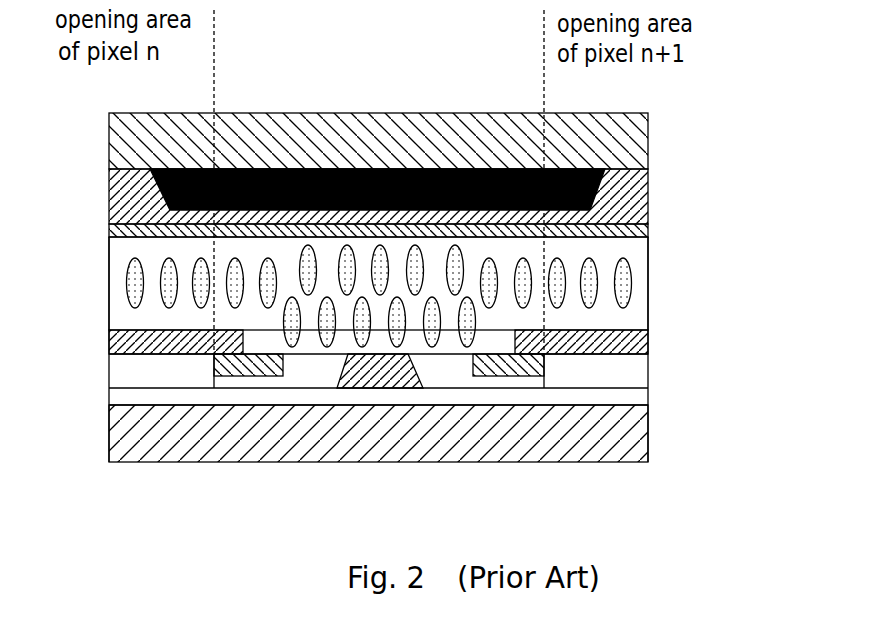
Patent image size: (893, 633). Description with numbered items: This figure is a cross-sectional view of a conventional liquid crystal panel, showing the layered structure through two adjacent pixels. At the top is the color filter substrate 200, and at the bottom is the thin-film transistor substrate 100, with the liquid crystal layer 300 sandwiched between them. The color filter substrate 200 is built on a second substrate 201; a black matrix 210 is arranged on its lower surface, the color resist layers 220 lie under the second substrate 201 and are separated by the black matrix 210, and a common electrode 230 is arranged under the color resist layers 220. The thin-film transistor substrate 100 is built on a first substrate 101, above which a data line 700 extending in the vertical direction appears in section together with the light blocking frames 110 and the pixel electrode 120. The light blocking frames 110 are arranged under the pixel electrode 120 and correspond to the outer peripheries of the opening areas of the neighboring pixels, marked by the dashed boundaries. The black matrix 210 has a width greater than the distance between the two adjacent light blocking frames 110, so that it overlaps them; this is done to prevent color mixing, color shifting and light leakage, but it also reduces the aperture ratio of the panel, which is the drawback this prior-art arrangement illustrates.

The thin-film transistor substrate 100 is at (94, 330).
The first substrate 101 is at (617, 435).
The light blocking frame 110 is at (544, 369).
The pixel electrode 120 is at (630, 340).
The color filter substrate 200 is at (96, 105).
The second substrate 201 is at (637, 153).
The black matrix 210 is at (290, 180).
The color resist layer 220 is at (634, 205).
The common electrode 230 is at (632, 229).
The liquid crystal layer 300 is at (135, 283).
The data line 700 is at (353, 377).